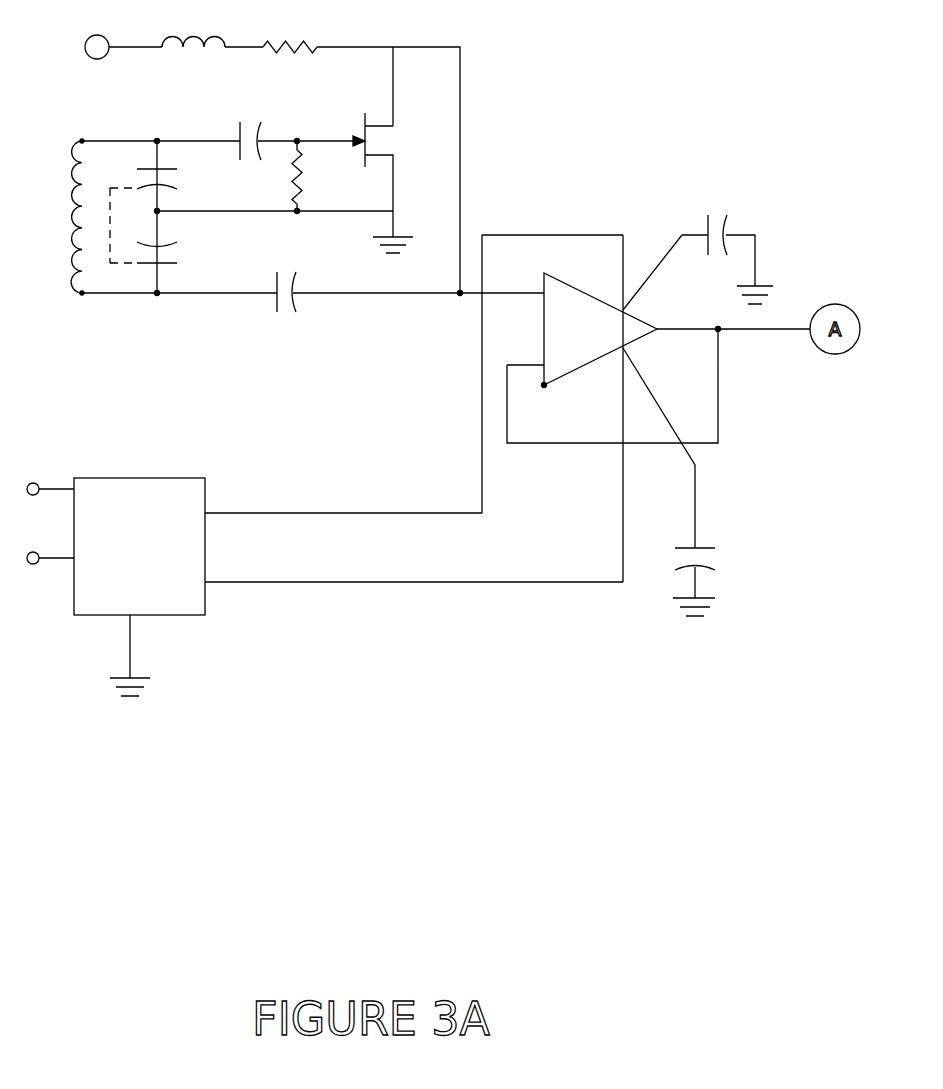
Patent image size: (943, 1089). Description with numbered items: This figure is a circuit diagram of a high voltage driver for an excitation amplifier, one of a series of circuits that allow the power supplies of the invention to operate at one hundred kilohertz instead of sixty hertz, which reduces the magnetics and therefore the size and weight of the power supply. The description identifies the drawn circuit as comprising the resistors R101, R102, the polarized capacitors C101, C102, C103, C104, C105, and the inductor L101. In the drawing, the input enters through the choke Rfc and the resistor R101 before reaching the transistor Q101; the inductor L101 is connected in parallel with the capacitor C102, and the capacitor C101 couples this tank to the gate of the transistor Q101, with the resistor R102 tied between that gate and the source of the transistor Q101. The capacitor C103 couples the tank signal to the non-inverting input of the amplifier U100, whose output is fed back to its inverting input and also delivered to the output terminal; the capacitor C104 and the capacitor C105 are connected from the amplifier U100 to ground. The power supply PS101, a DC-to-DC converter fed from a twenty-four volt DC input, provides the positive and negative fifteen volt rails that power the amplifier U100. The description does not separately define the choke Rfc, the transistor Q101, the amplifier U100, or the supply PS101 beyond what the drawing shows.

The RF choke inductor Rfc is at (193, 25).
The resistor R101 is at (290, 31).
The inductor L101 is at (86, 200).
The polarized capacitor C101 is at (245, 125).
The transistor Q101 is at (399, 181).
The resistor R102 is at (317, 176).
The polarized capacitor C102 is at (157, 216).
The polarized capacitor C103 is at (295, 279).
The operational amplifier U100 is at (646, 408).
The polarized capacitor C104 is at (698, 249).
The polarized capacitor C105 is at (681, 482).
The DC-DC converter power supply PS101 is at (315, 570).